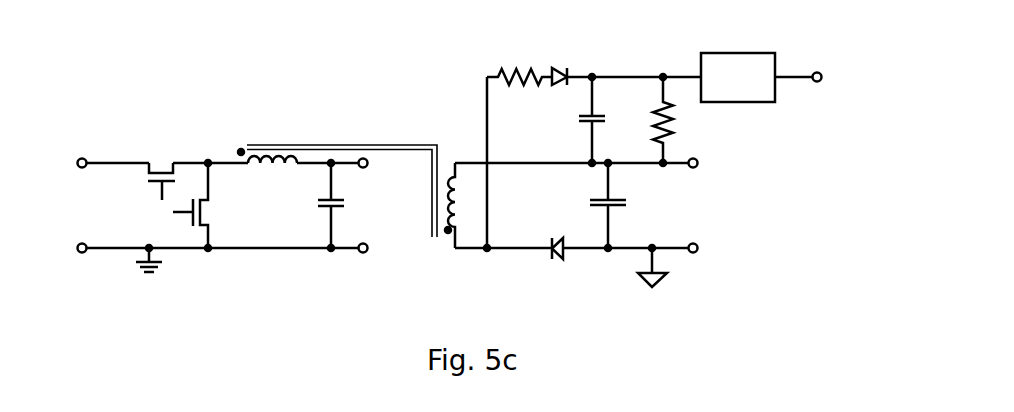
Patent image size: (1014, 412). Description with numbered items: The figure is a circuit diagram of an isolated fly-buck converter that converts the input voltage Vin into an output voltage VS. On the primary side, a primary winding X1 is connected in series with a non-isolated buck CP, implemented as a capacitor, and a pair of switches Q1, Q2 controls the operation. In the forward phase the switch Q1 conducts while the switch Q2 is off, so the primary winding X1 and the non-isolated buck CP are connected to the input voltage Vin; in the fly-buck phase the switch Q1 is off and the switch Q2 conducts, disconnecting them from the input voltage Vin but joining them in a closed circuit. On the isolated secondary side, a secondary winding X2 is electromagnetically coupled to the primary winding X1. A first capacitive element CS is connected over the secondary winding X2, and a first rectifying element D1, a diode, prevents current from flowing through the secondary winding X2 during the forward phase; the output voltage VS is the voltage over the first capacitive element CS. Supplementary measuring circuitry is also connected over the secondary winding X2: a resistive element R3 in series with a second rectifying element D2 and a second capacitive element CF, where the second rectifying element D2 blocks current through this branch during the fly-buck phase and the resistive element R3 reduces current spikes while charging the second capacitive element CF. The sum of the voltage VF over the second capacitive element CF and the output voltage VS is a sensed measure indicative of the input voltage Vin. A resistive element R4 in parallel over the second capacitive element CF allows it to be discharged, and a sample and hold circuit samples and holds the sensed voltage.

The input voltage Vin is at (63, 200).
The switch Q1 is at (162, 168).
The switch Q2 is at (205, 205).
The primary winding X1 is at (267, 169).
The non-isolated buck CP is at (320, 205).
The primary voltage VP is at (368, 206).
The secondary winding X2 is at (462, 205).
The resistor R3 is at (519, 61).
The second rectifying element D2 is at (566, 61).
The second capacitive element CF is at (575, 120).
The voltage over the second capacitive element VF is at (618, 121).
The resistive element R4 is at (678, 120).
The first capacitive element CS is at (597, 205).
The first rectifying element D1 is at (553, 262).
The output voltage VS is at (700, 206).